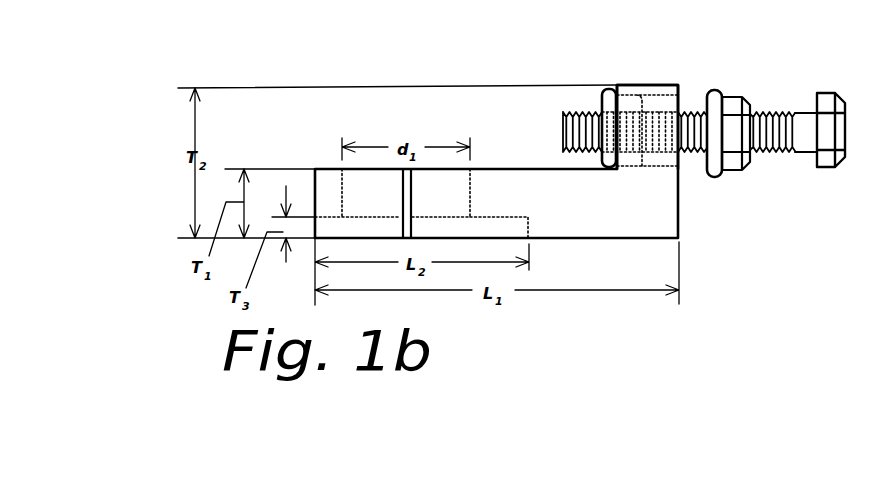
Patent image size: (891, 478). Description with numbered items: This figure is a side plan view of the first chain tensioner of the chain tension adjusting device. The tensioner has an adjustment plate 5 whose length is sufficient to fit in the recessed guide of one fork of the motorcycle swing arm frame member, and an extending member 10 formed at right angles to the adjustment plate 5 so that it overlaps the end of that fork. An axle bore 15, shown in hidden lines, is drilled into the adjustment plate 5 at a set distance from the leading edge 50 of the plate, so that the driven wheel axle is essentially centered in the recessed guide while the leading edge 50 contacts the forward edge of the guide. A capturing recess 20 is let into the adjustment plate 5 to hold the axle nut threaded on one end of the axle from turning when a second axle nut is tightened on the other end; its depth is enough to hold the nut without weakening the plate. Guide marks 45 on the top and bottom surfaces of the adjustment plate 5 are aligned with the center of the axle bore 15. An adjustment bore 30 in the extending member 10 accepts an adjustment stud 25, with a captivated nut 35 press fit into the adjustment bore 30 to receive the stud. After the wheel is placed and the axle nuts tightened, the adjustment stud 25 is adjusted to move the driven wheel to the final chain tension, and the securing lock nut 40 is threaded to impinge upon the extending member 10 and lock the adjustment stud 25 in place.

The adjustment plate 5 is at (679, 237).
The extending member 10 is at (678, 85).
The axle bore 15 is at (477, 207).
The capturing recess 20 is at (528, 224).
The adjustment stud 25 is at (803, 92).
The adjustment bore 30 is at (645, 95).
The captivated nut 35 is at (606, 88).
The securing lock nut 40 is at (735, 97).
The guide marks 45 is at (412, 207).
The leading edge 50 is at (320, 204).